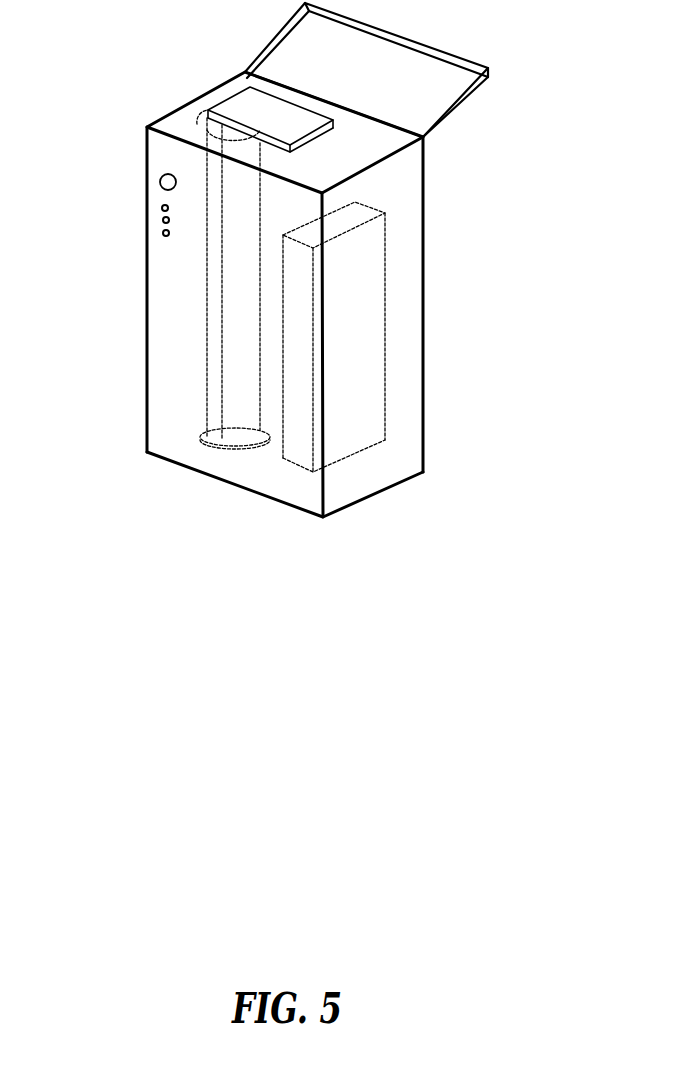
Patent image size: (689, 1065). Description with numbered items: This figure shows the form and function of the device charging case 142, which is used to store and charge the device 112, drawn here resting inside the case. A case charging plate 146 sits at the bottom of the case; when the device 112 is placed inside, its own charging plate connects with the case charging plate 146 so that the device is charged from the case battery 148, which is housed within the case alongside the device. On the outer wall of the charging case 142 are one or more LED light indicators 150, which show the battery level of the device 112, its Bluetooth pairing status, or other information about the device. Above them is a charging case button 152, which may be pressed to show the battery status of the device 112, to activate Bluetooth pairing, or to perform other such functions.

The device 112 is at (240, 285).
The device charging case 142 is at (402, 188).
The case charging plate 146 is at (223, 442).
The case battery 148 is at (352, 328).
The LED light indicators 150 is at (160, 228).
The charging case button 152 is at (160, 181).